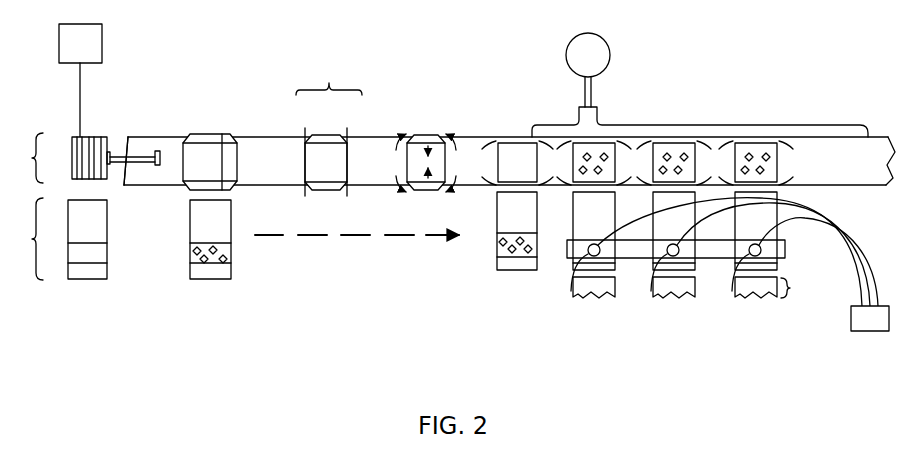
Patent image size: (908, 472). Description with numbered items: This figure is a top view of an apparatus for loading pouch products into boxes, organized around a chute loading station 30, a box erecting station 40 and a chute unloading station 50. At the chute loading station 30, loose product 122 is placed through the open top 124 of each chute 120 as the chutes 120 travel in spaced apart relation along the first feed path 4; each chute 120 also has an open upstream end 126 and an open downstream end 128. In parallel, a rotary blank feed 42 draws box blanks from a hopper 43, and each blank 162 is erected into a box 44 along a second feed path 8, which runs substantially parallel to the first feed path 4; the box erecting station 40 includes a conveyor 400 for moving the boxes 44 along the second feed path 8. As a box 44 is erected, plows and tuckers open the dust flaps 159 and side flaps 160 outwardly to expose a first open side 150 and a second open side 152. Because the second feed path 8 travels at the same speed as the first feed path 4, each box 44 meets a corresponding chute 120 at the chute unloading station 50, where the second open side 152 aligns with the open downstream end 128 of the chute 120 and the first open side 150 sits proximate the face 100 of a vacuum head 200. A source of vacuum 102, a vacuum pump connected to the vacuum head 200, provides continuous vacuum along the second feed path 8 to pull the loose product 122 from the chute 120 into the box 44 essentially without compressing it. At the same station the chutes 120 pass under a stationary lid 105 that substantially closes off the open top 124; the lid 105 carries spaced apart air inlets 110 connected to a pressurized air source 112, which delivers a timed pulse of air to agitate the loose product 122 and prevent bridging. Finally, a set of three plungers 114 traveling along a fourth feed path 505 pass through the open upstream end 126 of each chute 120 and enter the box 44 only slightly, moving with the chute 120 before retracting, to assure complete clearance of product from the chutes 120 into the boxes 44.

The first feed path 4 is at (30, 239).
The second feed path 8 is at (30, 158).
The chute loading station 30 is at (219, 300).
The box erecting station 40 is at (205, 84).
The rotary blank feed 42 is at (84, 137).
The hopper 43 is at (80, 80).
The box 44 is at (201, 134).
The chute unloading station 50 is at (613, 330).
The face 100 is at (819, 139).
The source of vacuum 102 is at (611, 57).
The stationary lid 105 is at (786, 250).
The air inlet 110 is at (647, 280).
The pressurized air source 112 is at (743, 264).
The plunger 114 is at (590, 298).
The chute 120 is at (83, 280).
The loose product 122 is at (604, 155).
The open top 124 is at (100, 253).
The open upstream end 126 is at (506, 272).
The open downstream end 128 is at (508, 190).
The first open side 150 is at (518, 142).
The second open side 152 is at (534, 187).
The dust flaps 159 is at (305, 130).
The side flaps 160 is at (325, 138).
The blank 162 is at (215, 150).
The vacuum head 200 is at (858, 128).
The conveyor 400 is at (144, 143).
The fourth feed path 505 is at (800, 288).